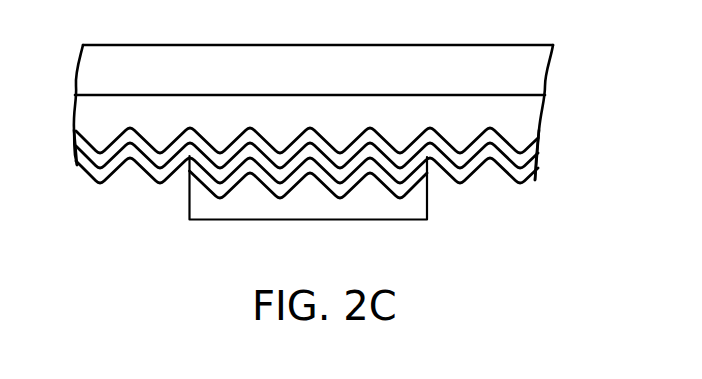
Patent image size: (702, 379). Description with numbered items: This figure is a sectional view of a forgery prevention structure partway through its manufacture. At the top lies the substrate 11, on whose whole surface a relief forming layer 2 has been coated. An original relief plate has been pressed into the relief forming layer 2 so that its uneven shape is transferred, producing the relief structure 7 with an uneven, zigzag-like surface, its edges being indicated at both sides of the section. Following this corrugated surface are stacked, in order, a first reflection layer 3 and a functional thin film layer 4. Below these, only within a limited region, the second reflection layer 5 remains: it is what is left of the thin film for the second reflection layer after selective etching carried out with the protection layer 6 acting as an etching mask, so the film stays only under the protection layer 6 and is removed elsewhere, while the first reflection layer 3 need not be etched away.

The substrate 11 is at (537, 67).
The relief forming layer 2 is at (533, 108).
The first reflection layer 3 is at (527, 157).
The functional thin film layer 4 is at (520, 176).
The second reflection layer 5 is at (217, 191).
The protection layer 6 is at (398, 210).
The relief structure 7 is at (98, 147).